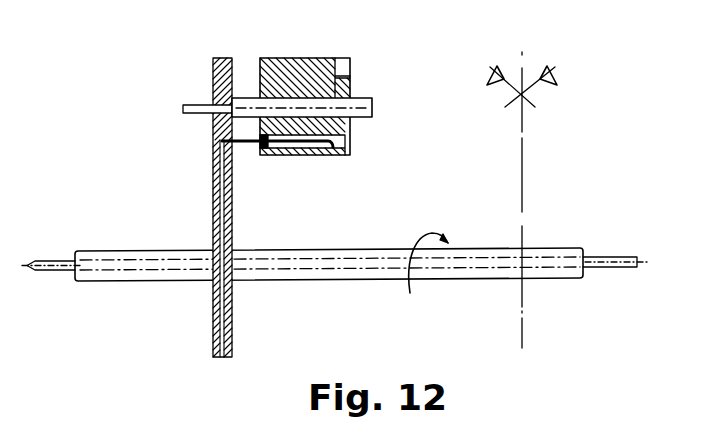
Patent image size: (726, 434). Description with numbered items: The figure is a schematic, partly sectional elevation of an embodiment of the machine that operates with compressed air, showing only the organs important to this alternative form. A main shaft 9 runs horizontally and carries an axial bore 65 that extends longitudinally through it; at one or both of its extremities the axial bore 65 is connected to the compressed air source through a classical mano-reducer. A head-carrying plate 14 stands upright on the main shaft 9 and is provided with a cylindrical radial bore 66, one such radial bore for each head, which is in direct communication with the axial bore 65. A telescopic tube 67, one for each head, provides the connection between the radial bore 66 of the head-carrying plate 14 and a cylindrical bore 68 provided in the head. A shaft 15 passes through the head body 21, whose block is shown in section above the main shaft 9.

The main shaft 9 is at (355, 280).
The head-carrying plate 14 is at (223, 58).
The shaft 15 is at (370, 98).
The bearing block 21 is at (283, 60).
The axial bore 65 is at (280, 280).
The cylindrical radial bore 66 is at (217, 347).
The telescopic tube 67 is at (236, 143).
The cylindrical bore 68 is at (313, 150).